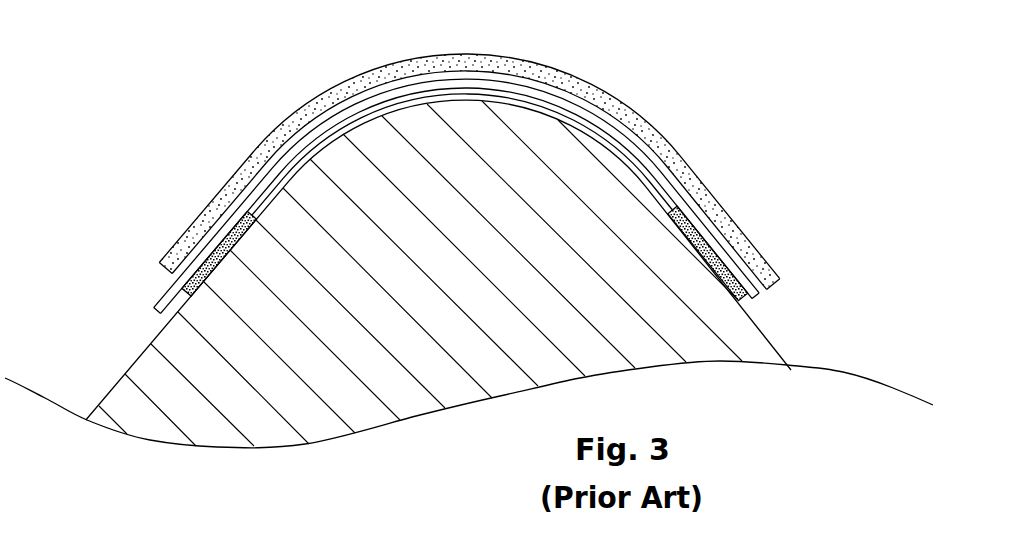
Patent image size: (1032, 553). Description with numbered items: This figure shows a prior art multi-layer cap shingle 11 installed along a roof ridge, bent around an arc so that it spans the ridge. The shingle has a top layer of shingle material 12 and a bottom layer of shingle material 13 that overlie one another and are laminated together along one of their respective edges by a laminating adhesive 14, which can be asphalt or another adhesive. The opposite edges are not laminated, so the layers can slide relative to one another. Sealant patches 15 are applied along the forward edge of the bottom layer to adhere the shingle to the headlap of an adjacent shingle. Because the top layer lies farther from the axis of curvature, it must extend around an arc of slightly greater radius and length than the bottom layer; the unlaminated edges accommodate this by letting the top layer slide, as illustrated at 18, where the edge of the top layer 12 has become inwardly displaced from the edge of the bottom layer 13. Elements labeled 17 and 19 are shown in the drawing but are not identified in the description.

The multi-layer cap shingle 11 is at (509, 162).
The top layer of shingle material 12 is at (728, 220).
The bottom layer of shingle material 13 is at (680, 198).
The laminating adhesive 14 is at (748, 262).
The sealant patches 15 is at (221, 247).
The inner layer 17 is at (186, 254).
The inward displacement of top layer edge 18 is at (148, 280).
The thin interface layer 19 is at (536, 113).